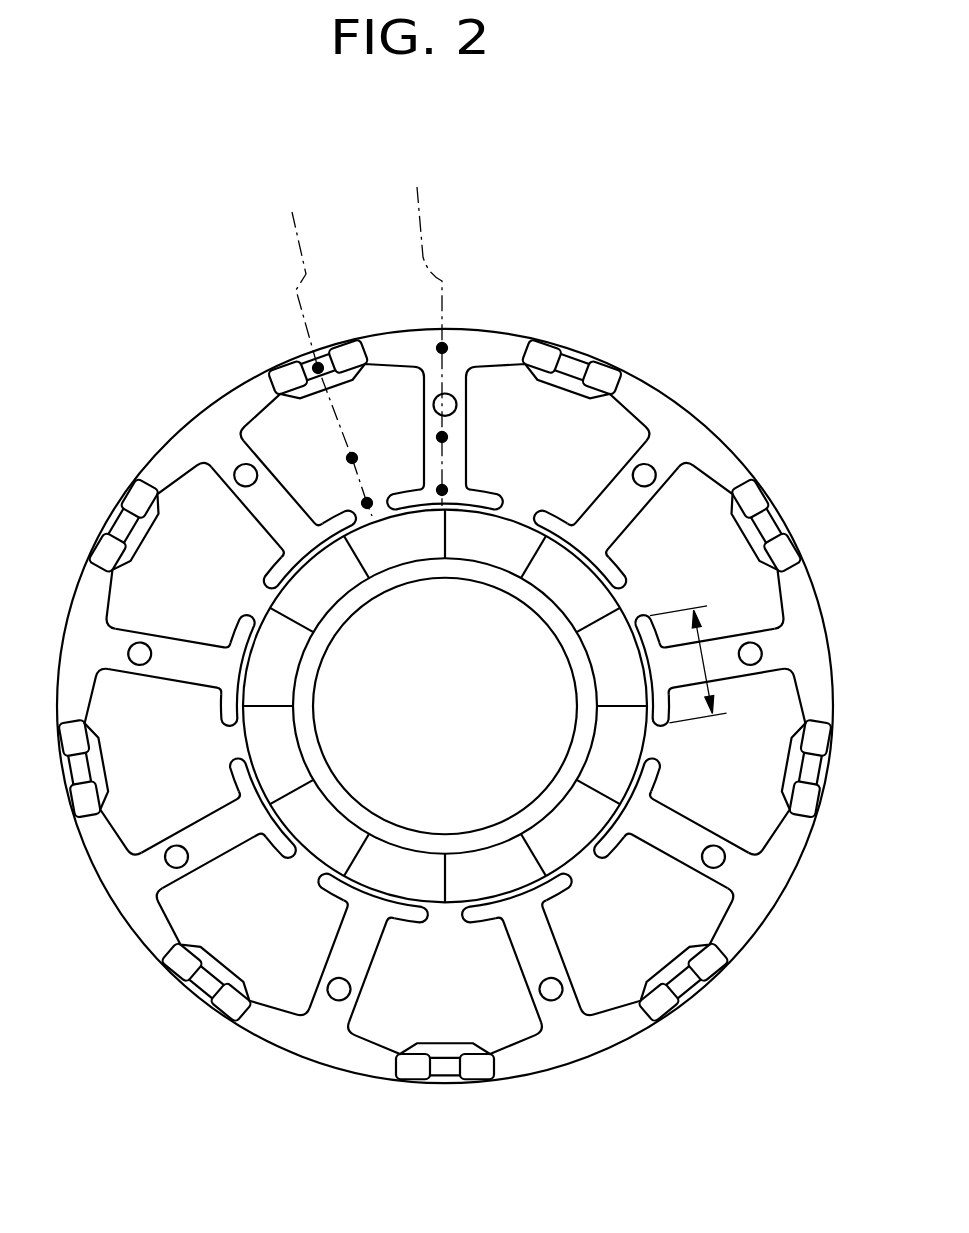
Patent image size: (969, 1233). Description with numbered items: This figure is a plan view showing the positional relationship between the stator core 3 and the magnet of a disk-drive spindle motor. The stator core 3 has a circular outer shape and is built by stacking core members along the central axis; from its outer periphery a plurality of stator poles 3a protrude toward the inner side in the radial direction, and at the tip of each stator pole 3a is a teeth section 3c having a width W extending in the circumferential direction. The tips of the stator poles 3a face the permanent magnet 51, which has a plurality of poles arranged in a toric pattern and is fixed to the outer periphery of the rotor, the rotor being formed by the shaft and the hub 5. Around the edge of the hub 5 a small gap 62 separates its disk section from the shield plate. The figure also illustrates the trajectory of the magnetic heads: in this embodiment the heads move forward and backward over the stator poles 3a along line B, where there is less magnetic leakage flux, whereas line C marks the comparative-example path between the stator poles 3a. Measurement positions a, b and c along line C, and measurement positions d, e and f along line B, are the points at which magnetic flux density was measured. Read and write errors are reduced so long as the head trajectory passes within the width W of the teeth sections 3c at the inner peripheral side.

The stator core 3 is at (445, 706).
The stator poles 3a is at (650, 500).
The teeth sections 3c is at (505, 487).
The hub 5 is at (445, 706).
The permanent magnet 51 is at (405, 578).
The small gap 62 is at (250, 612).
The width W is at (704, 662).
The line B is at (424, 324).
The line C is at (328, 342).
The measurement position a is at (318, 368).
The measurement position b is at (352, 458).
The measurement position c is at (367, 503).
The measurement position d is at (442, 348).
The measurement position e is at (442, 437).
The measurement position f is at (442, 490).